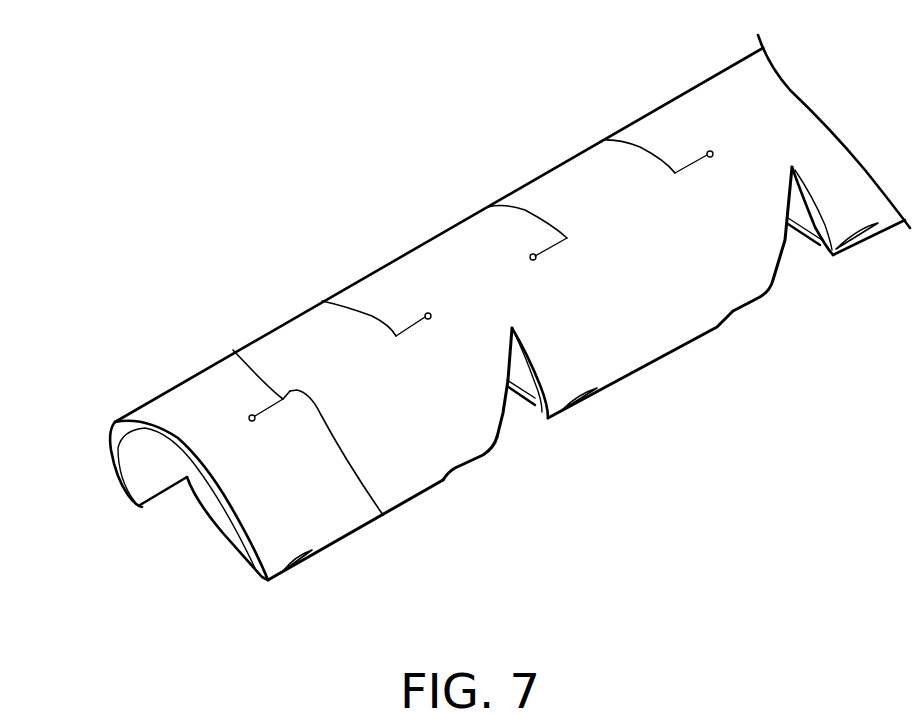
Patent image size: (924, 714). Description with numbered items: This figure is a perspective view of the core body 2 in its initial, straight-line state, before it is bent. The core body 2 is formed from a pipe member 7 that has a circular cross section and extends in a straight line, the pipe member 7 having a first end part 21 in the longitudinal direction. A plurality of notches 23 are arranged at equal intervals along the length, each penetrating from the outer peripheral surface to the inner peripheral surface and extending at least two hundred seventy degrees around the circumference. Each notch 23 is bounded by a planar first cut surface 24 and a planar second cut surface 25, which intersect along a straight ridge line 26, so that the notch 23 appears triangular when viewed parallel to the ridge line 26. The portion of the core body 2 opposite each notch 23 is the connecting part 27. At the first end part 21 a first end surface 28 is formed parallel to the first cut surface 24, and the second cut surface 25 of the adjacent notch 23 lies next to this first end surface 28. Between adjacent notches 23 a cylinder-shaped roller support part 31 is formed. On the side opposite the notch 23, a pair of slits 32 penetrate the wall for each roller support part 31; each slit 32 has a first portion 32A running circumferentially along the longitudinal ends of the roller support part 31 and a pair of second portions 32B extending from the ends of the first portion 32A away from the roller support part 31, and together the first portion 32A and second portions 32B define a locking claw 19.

The core body 2 is at (322, 162).
The pipe member 7 is at (657, 122).
The locking claw 19 is at (353, 303).
The first end part 21 is at (173, 398).
The notch 23 is at (498, 435).
The first cut surface 24 is at (542, 417).
The second cut surface 25 is at (502, 417).
The ridge line 26 is at (513, 327).
The connecting part 27 is at (450, 240).
The first end surface 28 is at (110, 455).
The roller support part 31 is at (352, 525).
The slit 32 is at (383, 320).
The first portion 32A is at (393, 513).
The second portion 32B is at (268, 407).